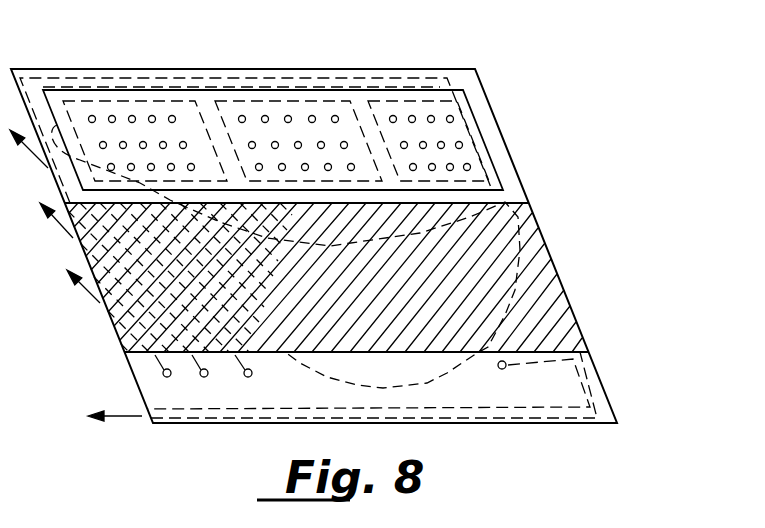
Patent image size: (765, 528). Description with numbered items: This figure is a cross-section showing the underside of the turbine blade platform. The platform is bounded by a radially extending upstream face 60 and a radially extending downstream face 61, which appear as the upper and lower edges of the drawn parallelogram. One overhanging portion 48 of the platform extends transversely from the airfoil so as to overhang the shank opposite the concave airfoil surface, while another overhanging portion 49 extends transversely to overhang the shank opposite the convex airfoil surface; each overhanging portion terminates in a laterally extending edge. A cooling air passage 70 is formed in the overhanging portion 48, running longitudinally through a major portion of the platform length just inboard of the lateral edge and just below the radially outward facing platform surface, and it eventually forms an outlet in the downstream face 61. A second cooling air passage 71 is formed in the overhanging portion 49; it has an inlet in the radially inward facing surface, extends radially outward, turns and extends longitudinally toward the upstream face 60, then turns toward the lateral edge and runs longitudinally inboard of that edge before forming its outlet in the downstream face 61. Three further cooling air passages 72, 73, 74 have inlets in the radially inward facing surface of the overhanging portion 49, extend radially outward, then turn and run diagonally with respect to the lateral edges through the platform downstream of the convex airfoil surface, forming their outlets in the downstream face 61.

The overhanging portion of the platform 48 is at (373, 70).
The cooling air passage 70 is at (290, 78).
The upstream face 60 is at (570, 298).
The downstream face 61 is at (120, 346).
The second cooling air passage 71 is at (597, 380).
The overhanging portion of the platform 49 is at (565, 425).
The cooling air passage 72 is at (250, 377).
The cooling air passage 73 is at (206, 377).
The cooling air passage 74 is at (169, 377).